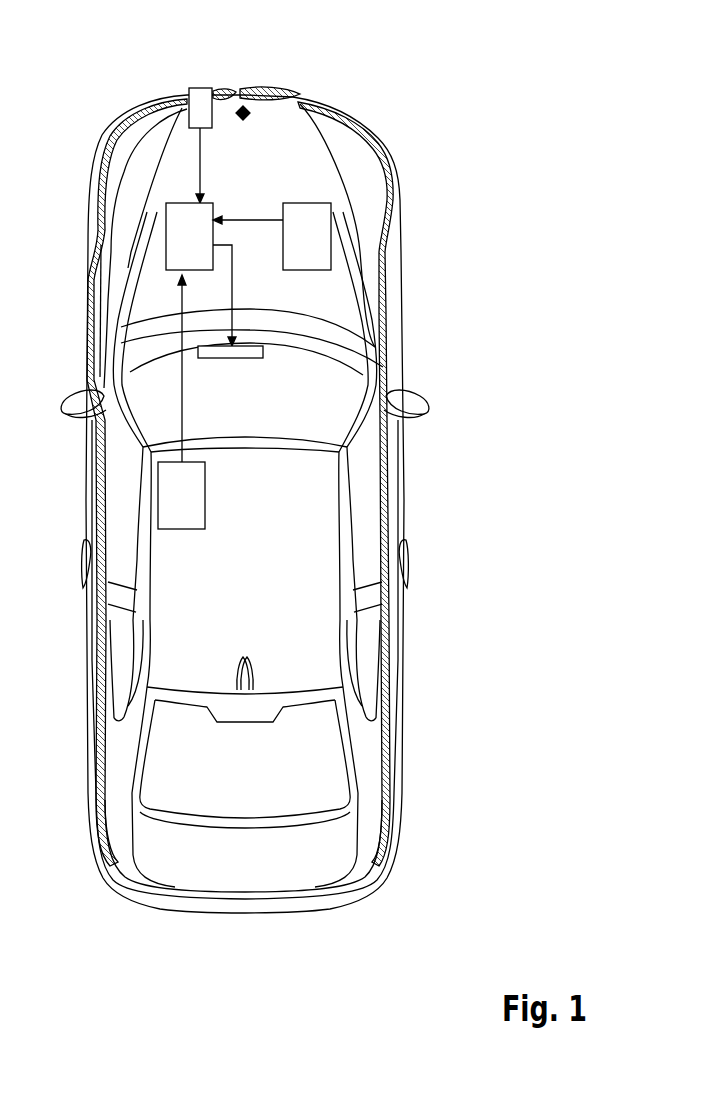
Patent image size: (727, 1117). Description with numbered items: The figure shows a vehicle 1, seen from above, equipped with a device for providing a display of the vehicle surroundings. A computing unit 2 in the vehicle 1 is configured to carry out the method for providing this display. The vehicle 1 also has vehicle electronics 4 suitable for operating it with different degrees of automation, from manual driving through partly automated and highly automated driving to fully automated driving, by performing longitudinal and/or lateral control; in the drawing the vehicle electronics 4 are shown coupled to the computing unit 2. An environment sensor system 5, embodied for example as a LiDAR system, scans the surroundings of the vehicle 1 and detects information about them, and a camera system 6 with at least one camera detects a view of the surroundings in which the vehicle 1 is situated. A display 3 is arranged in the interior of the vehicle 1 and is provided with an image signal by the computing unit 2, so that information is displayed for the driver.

The vehicle 1 is at (362, 125).
The computing unit 2 is at (166, 238).
The display 3 is at (243, 358).
The vehicle electronics 4 is at (331, 235).
The environment sensor system 5 is at (158, 497).
The camera system 6 is at (199, 88).